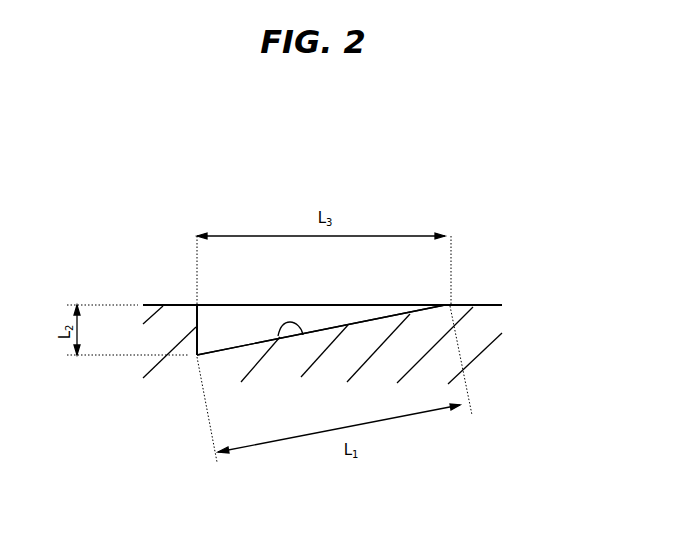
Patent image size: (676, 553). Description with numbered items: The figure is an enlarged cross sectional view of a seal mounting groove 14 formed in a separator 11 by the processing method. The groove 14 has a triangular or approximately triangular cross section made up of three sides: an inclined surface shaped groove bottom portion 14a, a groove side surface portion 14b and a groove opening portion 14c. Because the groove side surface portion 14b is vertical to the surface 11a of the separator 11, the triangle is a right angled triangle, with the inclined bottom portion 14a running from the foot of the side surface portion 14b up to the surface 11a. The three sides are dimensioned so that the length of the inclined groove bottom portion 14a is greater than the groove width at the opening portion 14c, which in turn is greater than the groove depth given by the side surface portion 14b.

The separator 11 is at (475, 342).
The surface of the separator 11a is at (177, 304).
The seal mounting groove 14 is at (347, 313).
The inclined surface shaped groove bottom portion 14a is at (303, 339).
The groove side surface portion 14b is at (197, 322).
The groove opening portion 14c is at (288, 306).